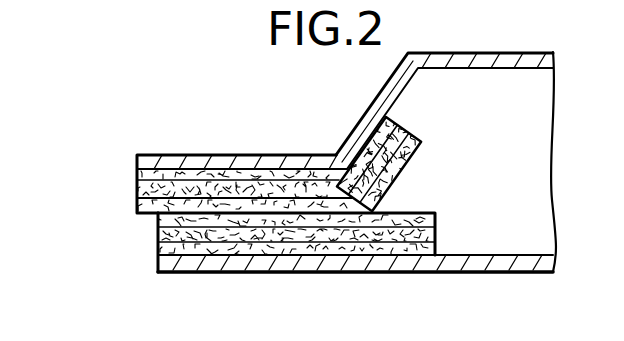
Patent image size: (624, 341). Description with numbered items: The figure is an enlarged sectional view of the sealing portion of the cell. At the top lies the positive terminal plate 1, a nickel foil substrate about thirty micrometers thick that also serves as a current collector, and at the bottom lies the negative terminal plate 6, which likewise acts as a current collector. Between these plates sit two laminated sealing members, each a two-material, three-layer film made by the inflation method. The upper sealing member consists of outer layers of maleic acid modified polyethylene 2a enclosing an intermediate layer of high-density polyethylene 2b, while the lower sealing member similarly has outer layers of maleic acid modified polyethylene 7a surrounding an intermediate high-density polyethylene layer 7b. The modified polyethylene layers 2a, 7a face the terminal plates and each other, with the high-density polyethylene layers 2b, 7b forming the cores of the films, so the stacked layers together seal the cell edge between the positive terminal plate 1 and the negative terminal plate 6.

The positive terminal plate 1 is at (470, 52).
The maleic acid modified polyethylene layer 2a is at (175, 168).
The high-density polyethylene layer 2b is at (137, 192).
The negative terminal plate 6 is at (482, 273).
The maleic acid modified polyethylene layer 7a is at (158, 240).
The high-density polyethylene layer 7b is at (193, 272).